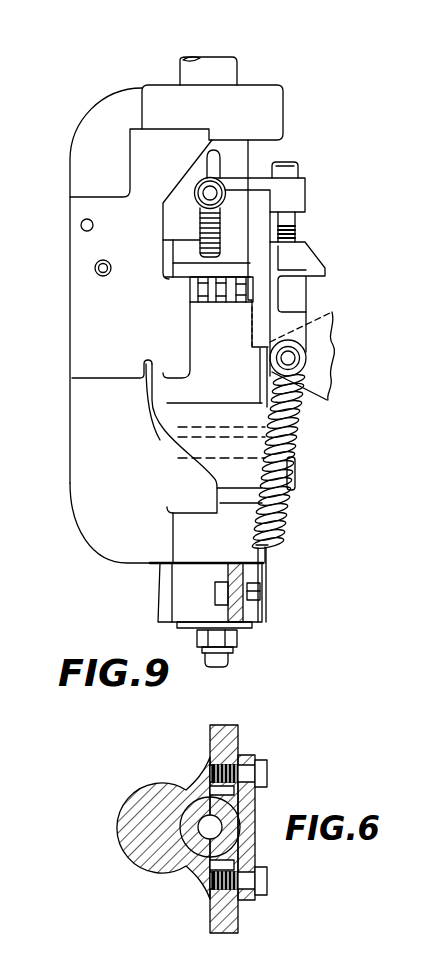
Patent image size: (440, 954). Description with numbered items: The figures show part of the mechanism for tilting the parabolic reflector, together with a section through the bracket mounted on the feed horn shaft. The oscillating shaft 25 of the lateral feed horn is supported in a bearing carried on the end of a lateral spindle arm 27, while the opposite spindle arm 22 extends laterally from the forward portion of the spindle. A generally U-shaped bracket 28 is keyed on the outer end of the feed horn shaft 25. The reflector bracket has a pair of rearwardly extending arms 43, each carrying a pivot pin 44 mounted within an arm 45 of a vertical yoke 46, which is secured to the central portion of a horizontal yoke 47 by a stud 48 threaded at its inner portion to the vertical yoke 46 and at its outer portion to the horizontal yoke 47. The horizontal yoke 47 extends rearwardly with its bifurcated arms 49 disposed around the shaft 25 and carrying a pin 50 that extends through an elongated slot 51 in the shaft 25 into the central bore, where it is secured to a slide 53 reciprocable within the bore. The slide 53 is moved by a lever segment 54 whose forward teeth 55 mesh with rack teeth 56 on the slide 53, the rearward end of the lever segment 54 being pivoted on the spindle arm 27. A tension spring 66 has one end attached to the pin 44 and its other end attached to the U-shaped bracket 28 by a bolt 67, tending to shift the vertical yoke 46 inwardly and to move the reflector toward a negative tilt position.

In FIG. 9, the spindle arm 22 is at (124, 552).
In FIG. 9, the oscillating shaft 25 is at (237, 78).
In FIG. 6, the oscillating shaft 25 is at (184, 846).
In FIG. 9, the spindle arm 27 is at (71, 173).
In FIG. 9, the U-shaped bracket 28 is at (260, 623).
In FIG. 6, the U-shaped bracket 28 is at (189, 790).
In FIG. 9, the rearwardly extending arm 43 is at (318, 386).
In FIG. 9, the pivot pin 44 is at (300, 357).
In FIG. 9, the arm of vertical yoke 45 is at (297, 301).
In FIG. 9, the vertical yoke 46 is at (320, 252).
In FIG. 9, the horizontal yoke 47 is at (305, 189).
In FIG. 9, the stud 48 is at (297, 233).
In FIG. 9, the bifurcated arms 49 is at (236, 186).
In FIG. 9, the pin 50 is at (205, 192).
In FIG. 9, the elongated slot 51 is at (208, 164).
In FIG. 9, the slide 53 is at (195, 250).
In FIG. 9, the lever segment 54 is at (180, 218).
In FIG. 9, the forward teeth 55 is at (200, 233).
In FIG. 9, the rack teeth 56 is at (214, 245).
In FIG. 9, the tension spring 66 is at (287, 530).
In FIG. 9, the bolt 67 is at (262, 594).